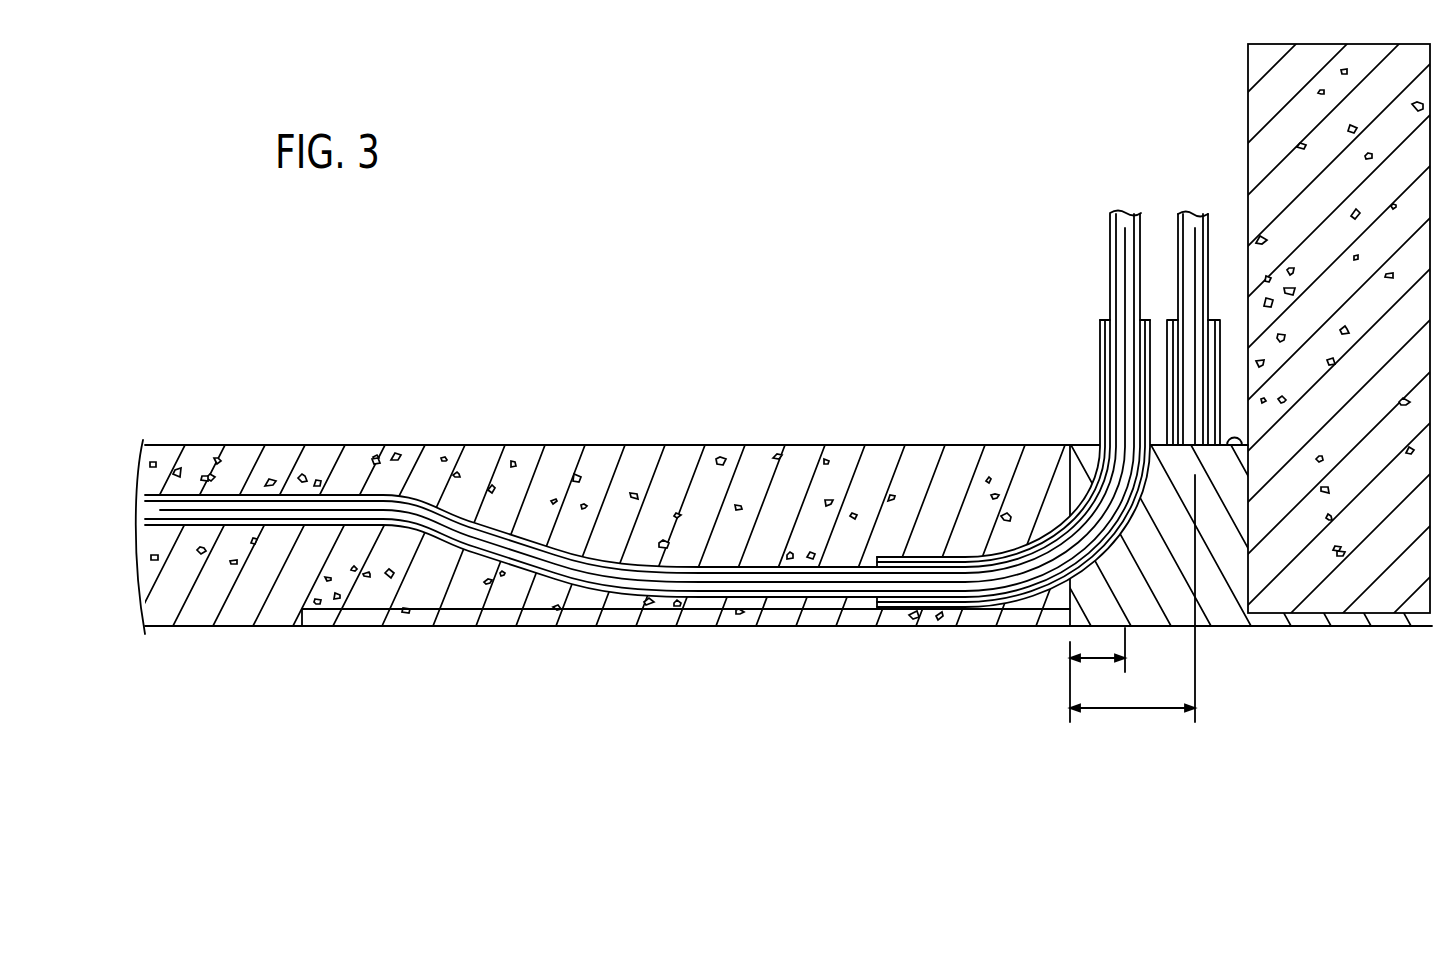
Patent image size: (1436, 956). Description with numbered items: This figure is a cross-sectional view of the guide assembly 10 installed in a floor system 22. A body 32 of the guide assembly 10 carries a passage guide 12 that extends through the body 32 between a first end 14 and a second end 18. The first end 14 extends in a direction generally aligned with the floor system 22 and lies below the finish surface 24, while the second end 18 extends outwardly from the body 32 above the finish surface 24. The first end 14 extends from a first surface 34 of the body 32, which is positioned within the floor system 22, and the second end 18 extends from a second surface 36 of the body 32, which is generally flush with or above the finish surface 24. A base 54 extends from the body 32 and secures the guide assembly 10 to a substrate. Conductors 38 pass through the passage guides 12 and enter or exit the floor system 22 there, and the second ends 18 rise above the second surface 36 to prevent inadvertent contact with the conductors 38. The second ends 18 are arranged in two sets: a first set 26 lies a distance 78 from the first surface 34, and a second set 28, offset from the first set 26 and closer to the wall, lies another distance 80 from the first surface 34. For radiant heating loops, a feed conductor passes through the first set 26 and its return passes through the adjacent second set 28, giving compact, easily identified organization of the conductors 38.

The guide assembly 10 is at (1040, 266).
The passage guide 12 is at (1099, 304).
The first end 14 is at (967, 622).
The second end 18 is at (1103, 382).
The floor system 22 is at (410, 574).
The finish surface 24 is at (602, 444).
The first set 26 is at (1061, 241).
The second set 28 is at (1217, 195).
The body 32 is at (1218, 606).
The first surface 34 is at (1068, 482).
The second surface 36 is at (1247, 543).
The conductor 38 is at (393, 508).
The base 54 is at (582, 620).
The distance 78 is at (1098, 661).
The distance 80 is at (1130, 711).